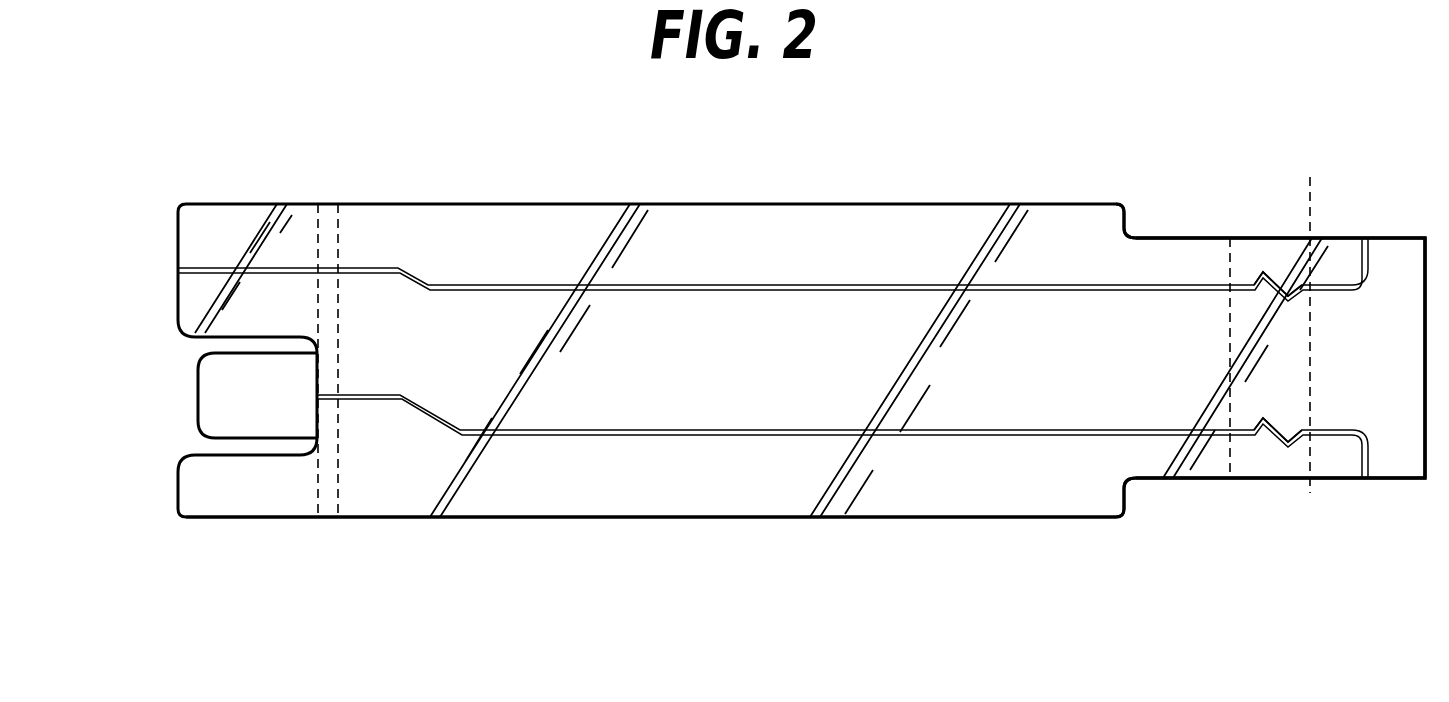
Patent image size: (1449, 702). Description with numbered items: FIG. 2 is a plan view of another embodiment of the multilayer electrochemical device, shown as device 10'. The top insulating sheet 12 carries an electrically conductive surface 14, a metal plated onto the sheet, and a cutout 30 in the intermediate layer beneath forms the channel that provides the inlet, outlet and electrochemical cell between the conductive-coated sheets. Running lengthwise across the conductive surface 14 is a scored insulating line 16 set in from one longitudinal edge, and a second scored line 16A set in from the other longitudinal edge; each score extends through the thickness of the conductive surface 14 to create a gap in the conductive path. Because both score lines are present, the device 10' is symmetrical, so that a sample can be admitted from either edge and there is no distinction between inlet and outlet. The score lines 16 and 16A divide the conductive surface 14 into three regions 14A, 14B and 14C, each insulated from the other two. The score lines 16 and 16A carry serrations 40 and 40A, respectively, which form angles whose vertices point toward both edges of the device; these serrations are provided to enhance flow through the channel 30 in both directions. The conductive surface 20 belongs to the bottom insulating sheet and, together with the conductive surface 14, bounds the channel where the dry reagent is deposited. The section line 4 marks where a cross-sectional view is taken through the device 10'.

The electrical connector / contact assembly 10' is at (791, 416).
The dielectric housing 12 is at (577, 517).
The housing body 14 is at (710, 490).
The housing body portion 14A is at (978, 480).
The housing end portion 14B is at (1040, 400).
The housing top portion 14C is at (1070, 243).
The first conductive strip 16 is at (803, 272).
The second conductive strip 16A is at (767, 443).
The center tab 20 is at (236, 395).
The end section 30 is at (1232, 513).
The strip bend 40 is at (1260, 268).
The strip bend 40A is at (1273, 445).
The section line 4- 4 is at (1316, 182).